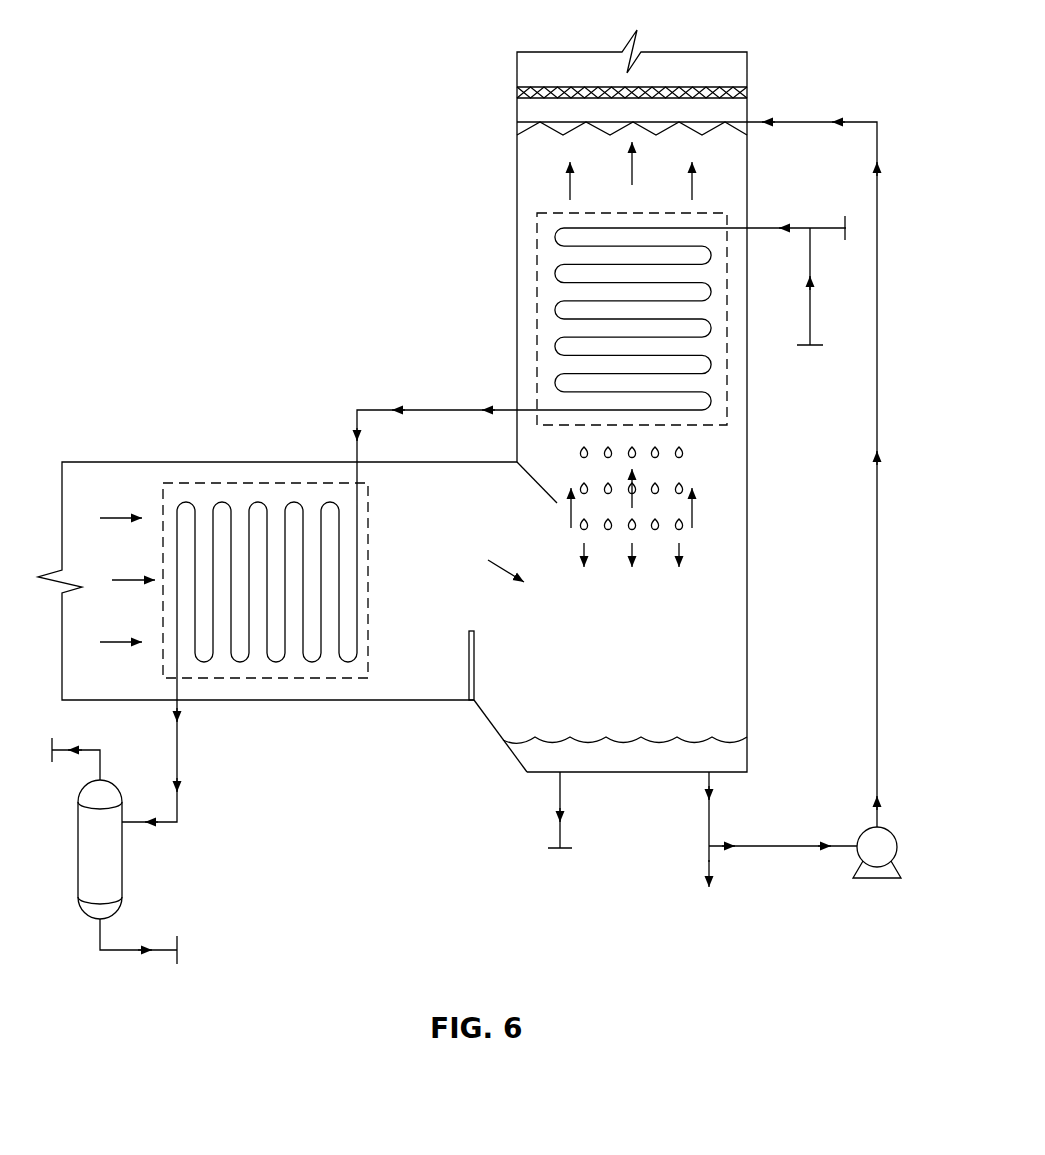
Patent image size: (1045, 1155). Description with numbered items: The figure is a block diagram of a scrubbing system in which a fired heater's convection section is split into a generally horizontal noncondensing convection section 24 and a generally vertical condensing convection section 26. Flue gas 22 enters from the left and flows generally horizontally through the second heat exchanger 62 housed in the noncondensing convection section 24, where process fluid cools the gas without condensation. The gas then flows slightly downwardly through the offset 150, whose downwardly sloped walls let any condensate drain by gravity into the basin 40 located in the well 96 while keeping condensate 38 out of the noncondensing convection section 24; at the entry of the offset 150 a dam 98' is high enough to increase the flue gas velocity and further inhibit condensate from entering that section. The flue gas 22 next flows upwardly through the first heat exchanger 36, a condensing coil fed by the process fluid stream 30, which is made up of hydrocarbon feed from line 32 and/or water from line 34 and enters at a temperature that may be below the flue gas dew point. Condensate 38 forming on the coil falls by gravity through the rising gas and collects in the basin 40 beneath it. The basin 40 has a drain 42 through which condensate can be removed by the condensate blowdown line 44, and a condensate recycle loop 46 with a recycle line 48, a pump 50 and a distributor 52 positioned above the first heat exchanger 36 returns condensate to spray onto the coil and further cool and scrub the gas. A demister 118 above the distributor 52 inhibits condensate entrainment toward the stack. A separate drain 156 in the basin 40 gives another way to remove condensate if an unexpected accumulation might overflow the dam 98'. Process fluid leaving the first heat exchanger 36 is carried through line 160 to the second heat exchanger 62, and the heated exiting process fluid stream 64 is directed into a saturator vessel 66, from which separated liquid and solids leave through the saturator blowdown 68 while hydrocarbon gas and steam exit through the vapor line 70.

The flue gas 22 is at (127, 514).
The non-condensing convection section 24 is at (238, 392).
The condensing convection section 26 is at (497, 183).
The process fluid stream 30 is at (762, 227).
The hydrocarbon feed line 32 is at (824, 227).
The water line 34 is at (813, 328).
The first heat exchanger 36 is at (711, 213).
The condensate 38 is at (680, 525).
The basin 40 is at (652, 752).
The drain 42 is at (705, 810).
The condensate blowdown line 44 is at (712, 870).
The condensate recycle loop 46 is at (884, 543).
The recycle line 48 is at (757, 845).
The pump 50 is at (862, 832).
The distributor 52 is at (525, 123).
The second heat exchanger 62 is at (193, 485).
The exiting process fluid stream 64 is at (178, 760).
The saturator vessel 66 is at (108, 857).
The saturator blowdown 68 is at (93, 937).
The vapor line 70 is at (82, 748).
The well 96 is at (528, 765).
The dam 98' is at (510, 662).
The demister 118 is at (683, 88).
The offset 150 is at (470, 480).
The drain 156 is at (562, 810).
The coil interconnect line 160 is at (443, 411).